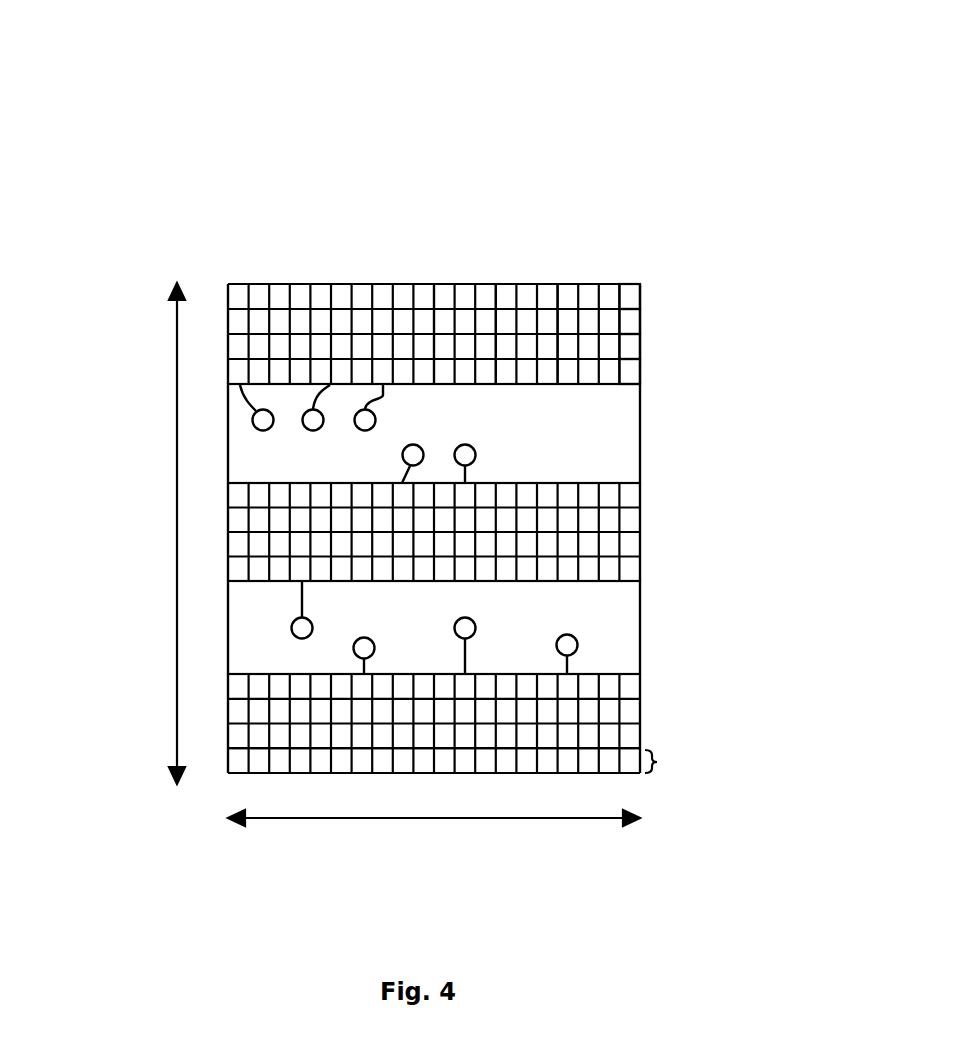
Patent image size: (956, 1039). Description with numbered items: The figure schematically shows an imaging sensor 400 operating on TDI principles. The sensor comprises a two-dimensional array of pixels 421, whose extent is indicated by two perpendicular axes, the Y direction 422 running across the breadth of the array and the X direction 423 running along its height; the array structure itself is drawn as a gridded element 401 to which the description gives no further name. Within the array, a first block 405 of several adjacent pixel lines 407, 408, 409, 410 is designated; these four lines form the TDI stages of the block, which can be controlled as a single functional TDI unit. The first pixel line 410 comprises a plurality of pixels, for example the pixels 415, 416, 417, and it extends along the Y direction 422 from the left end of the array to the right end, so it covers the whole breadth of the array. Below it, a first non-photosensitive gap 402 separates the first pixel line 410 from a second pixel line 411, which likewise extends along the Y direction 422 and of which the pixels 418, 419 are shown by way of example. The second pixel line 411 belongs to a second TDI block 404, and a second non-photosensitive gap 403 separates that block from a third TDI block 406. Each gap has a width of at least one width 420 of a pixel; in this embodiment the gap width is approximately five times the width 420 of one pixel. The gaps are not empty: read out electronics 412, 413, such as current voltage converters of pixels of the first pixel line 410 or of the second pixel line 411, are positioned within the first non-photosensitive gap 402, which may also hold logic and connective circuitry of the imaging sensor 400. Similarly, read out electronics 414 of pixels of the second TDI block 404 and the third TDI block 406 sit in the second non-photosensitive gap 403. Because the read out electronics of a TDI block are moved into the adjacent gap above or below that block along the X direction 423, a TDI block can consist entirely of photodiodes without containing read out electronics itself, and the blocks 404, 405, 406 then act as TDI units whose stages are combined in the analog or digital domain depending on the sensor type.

The imaging sensor 400 is at (698, 172).
The substrate 401 is at (365, 284).
The first non-photosensitive gap 402 is at (639, 400).
The second non-photosensitive gap 403 is at (640, 627).
The second TDI block 404 is at (722, 473).
The first block 405 is at (722, 272).
The third TDI block 406 is at (722, 663).
The pixel line 407 is at (630, 292).
The pixel line 408 is at (630, 318).
The pixel line 409 is at (630, 343).
The first pixel line 410 is at (630, 369).
The second pixel line 411 is at (642, 488).
The read out electronics 412 is at (252, 420).
The read out electronics 413 is at (402, 455).
The read out electronics 414 is at (291, 628).
The pixel 415 is at (505, 370).
The pixel 416 is at (567, 370).
The pixel 417 is at (443, 370).
The pixel 418 is at (608, 483).
The pixel 419 is at (592, 483).
The width of a pixel 420 is at (663, 760).
The 2D array of pixels 421 is at (199, 171).
The Y direction 422 is at (553, 820).
The X direction 423 is at (177, 687).